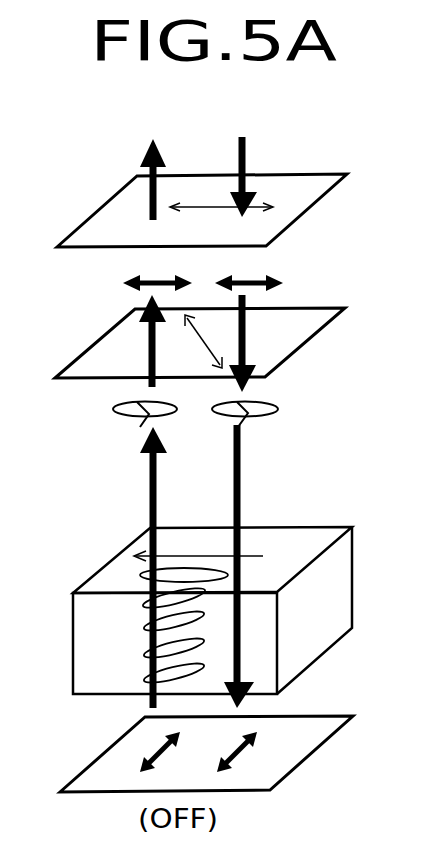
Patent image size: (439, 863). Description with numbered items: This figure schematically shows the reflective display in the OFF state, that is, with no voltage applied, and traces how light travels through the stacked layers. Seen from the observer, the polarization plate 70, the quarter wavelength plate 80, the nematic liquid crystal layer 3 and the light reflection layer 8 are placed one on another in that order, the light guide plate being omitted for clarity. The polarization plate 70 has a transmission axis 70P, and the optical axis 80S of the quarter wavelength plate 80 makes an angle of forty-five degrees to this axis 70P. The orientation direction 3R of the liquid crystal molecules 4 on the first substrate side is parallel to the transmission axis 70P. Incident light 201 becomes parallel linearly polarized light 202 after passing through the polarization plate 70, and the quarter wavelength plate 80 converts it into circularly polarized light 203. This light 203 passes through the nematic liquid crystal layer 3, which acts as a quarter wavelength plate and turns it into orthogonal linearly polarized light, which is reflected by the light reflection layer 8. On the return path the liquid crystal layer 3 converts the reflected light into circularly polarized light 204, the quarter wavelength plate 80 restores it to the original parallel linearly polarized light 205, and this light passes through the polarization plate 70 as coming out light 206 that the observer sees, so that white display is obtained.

The polarization plate 70 is at (117, 227).
The polarization axis 70P is at (207, 207).
The coming out light 206 is at (150, 197).
The incident light 201 is at (245, 153).
The quarter wavelength plate 80 is at (95, 357).
The optical axis 80S is at (210, 347).
The parallel linearly polarized light 205 is at (148, 347).
The linearly polarized light 202 is at (247, 330).
The circularly polarized light 204 is at (150, 493).
The circularly polarized light 203 is at (240, 503).
The nematic liquid crystal layer 3 is at (85, 662).
The orientation direction 3R is at (197, 555).
The liquid crystal molecules 4 is at (147, 622).
The light reflection layer 8 is at (115, 762).